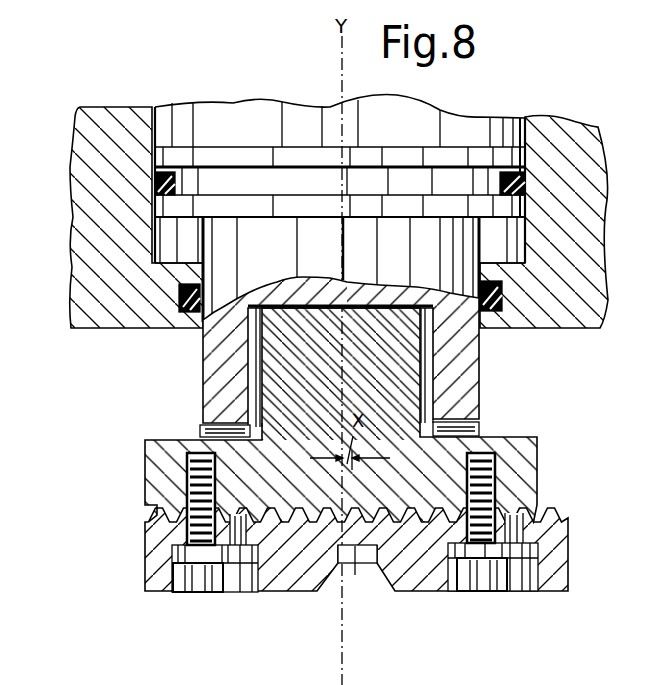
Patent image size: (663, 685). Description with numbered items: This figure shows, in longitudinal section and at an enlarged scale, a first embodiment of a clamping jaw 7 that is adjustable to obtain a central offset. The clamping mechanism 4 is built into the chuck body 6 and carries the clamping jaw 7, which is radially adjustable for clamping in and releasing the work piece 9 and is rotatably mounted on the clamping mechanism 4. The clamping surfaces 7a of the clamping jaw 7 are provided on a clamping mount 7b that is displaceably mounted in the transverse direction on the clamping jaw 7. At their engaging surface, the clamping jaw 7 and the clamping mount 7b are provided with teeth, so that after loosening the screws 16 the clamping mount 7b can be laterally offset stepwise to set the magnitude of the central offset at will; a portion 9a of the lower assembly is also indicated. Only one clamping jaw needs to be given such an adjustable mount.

The chuck body 6 is at (82, 147).
The clamping mechanism 4 is at (246, 187).
The clamping jaw 7 is at (150, 470).
The clamping surfaces 7a is at (336, 584).
The clamping mount 7b is at (418, 572).
The work piece 9 is at (339, 490).
The base part of clamping unit 9a is at (312, 596).
The screws 16 is at (200, 583).